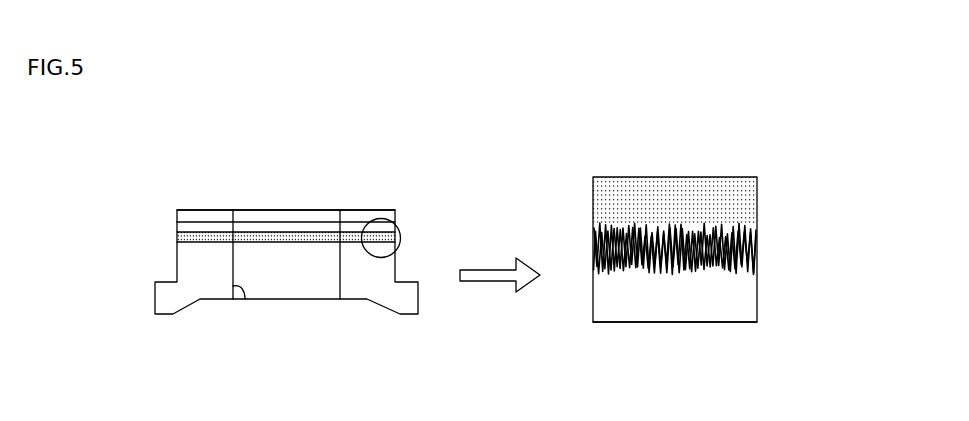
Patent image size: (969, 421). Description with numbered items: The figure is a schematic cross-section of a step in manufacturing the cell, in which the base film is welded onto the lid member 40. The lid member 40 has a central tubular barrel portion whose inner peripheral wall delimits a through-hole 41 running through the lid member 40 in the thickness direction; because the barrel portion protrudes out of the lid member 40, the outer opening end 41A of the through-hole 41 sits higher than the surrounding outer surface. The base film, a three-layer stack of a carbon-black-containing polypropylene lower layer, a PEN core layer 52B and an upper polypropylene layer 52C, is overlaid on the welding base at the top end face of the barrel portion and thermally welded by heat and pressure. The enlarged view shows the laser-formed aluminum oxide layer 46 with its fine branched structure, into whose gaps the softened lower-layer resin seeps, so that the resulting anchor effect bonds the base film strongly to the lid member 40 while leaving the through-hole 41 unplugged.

The lid member 40 is at (168, 318).
The through-hole 41 is at (244, 300).
The outer opening end 41A is at (254, 241).
The aluminum oxide layer 46 is at (773, 223).
The PEN layer 52B is at (177, 227).
The upper PP layer 52C is at (177, 213).